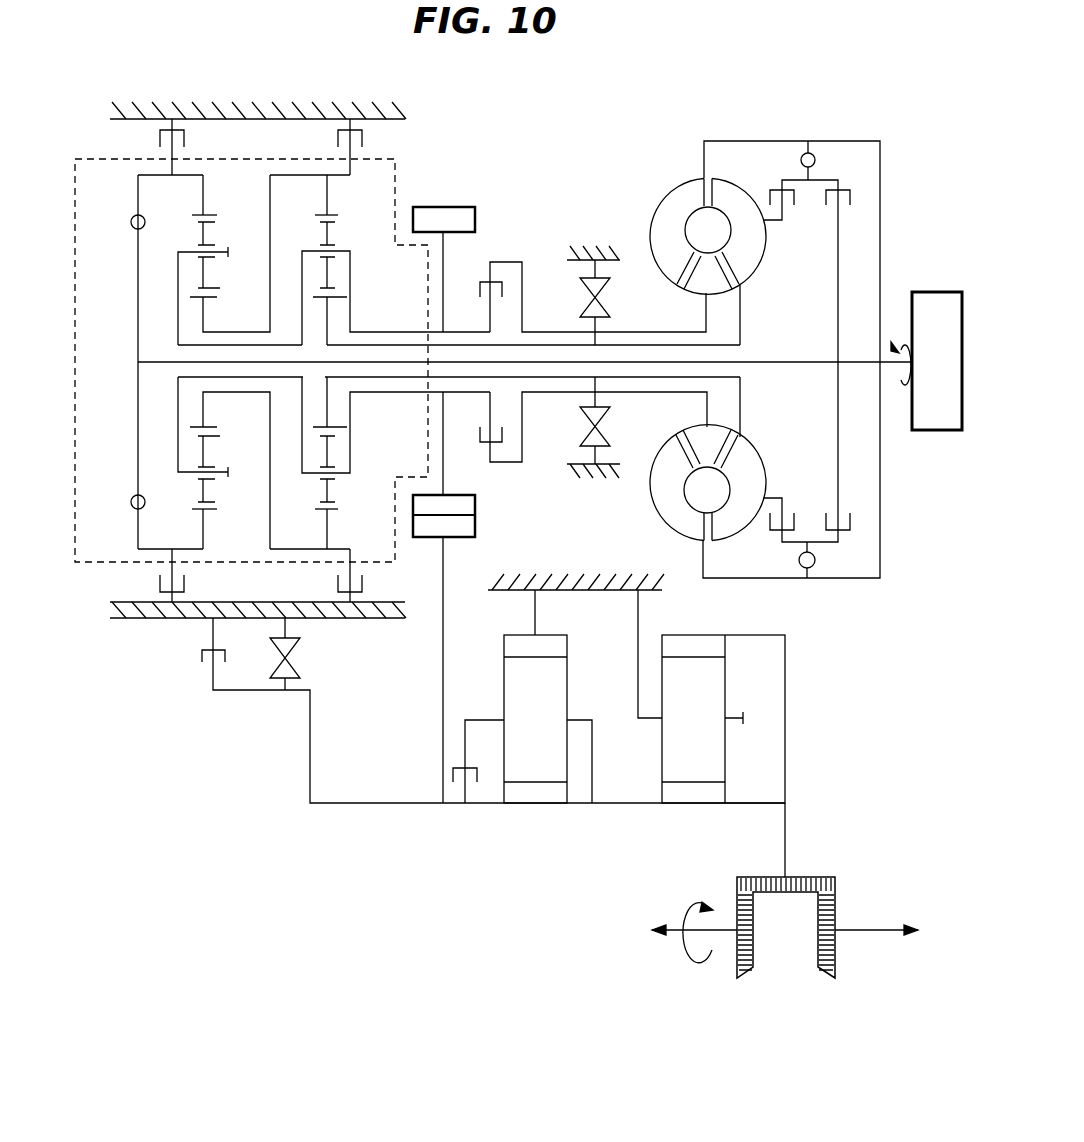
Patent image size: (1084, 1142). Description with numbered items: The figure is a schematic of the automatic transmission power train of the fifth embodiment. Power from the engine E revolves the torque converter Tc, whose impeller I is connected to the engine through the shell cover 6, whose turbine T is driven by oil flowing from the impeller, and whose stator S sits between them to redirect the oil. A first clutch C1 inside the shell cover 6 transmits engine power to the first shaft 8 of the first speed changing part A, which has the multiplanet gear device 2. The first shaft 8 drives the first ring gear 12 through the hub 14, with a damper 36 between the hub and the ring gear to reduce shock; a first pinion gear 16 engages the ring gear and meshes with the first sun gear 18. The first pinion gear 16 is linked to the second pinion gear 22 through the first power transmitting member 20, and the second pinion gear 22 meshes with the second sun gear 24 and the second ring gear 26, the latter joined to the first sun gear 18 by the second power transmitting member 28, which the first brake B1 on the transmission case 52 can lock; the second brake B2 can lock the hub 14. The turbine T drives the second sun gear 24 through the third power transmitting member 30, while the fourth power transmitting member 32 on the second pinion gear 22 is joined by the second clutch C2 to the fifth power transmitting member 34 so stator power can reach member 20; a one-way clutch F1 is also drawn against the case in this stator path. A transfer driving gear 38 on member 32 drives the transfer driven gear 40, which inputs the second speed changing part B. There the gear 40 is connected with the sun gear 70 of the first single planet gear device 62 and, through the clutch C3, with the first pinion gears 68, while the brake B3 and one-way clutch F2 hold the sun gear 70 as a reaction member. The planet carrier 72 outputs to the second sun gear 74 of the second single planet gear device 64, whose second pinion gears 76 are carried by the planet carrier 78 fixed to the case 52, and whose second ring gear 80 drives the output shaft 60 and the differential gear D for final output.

The multiplanet gear device 2 is at (88, 158).
The shell cover 6 is at (790, 140).
The first shaft 8 is at (793, 360).
The first ring gear 12 is at (196, 212).
The hub 14 is at (138, 293).
The first pinion gear 16 is at (214, 288).
The first sun gear 18 is at (212, 298).
The first power transmitting member 20 is at (188, 348).
The second pinion gear 22 is at (336, 223).
The second sun gear 24 is at (347, 300).
The second ring gear 26 is at (320, 213).
The second power transmitting member 28 is at (270, 201).
The third power transmitting member 30 is at (742, 352).
The fourth power transmitting member 32 is at (352, 269).
The fifth power transmitting member 34 is at (548, 331).
The damper 36 is at (130, 224).
The transfer driving gear 38 is at (477, 220).
The transfer driven gear 40 is at (477, 527).
The transmission case 52 is at (272, 102).
The output shaft 60 is at (878, 928).
The first single planet gear device 62 is at (516, 814).
The second single planet gear device 64 is at (661, 814).
The first pinion gears 68 is at (552, 692).
The first sun gear 70 is at (530, 800).
The planet carrier 72 is at (595, 763).
The second sun gear 74 is at (693, 796).
The second pinion gears 76 is at (722, 677).
The planet carrier 78 is at (637, 613).
The second ring gear 80 is at (697, 646).
The first speed changing part A is at (403, 190).
The second speed changing part B is at (421, 839).
The first brake B1 is at (369, 147).
The second brake B2 is at (191, 147).
The brake B3 is at (474, 710).
The first clutch C1 is at (826, 346).
The second clutch C2 is at (582, 355).
The clutch C3 is at (479, 761).
The differential gear D is at (696, 975).
The engine E is at (926, 361).
The first one-way clutch F1 is at (605, 362).
The one-way clutch F2 is at (303, 654).
The impeller I is at (665, 212).
The stator S is at (692, 291).
The turbine T is at (758, 245).
The torque converter Tc is at (722, 134).